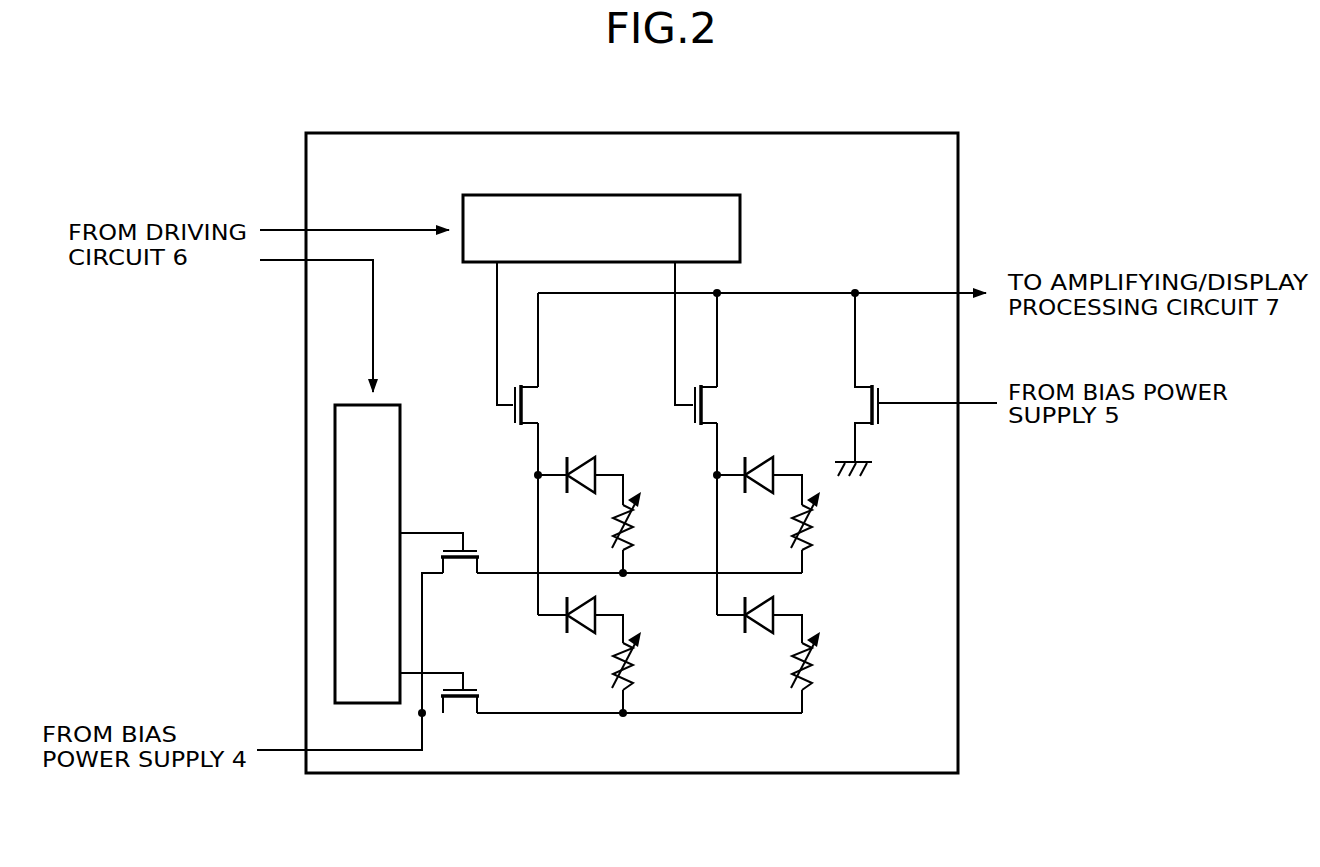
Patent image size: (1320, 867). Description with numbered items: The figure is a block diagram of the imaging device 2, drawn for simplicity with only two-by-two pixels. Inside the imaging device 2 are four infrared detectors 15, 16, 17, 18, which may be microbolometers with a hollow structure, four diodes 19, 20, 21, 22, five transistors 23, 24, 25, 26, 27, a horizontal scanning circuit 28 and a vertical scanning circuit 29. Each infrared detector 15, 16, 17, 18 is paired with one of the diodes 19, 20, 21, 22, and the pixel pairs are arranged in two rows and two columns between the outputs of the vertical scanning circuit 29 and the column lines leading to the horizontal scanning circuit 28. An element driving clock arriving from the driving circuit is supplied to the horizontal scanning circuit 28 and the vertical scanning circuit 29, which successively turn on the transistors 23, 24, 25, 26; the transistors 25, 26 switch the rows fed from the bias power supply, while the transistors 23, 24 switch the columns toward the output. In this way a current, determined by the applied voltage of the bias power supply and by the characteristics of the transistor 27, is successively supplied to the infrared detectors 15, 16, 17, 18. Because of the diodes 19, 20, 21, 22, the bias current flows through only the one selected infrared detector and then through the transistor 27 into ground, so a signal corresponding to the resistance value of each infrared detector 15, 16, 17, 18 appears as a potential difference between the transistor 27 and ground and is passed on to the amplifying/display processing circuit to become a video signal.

The imaging device 2 is at (962, 161).
The infrared detector 15 is at (641, 524).
The infrared detector 16 is at (820, 524).
The infrared detector 17 is at (641, 661).
The infrared detector 18 is at (820, 661).
The diode 19 is at (589, 463).
The diode 20 is at (767, 463).
The diode 21 is at (577, 632).
The diode 22 is at (755, 632).
The transistor 23 is at (520, 429).
The transistor 24 is at (727, 401).
The transistor 25 is at (483, 562).
The transistor 26 is at (483, 705).
The transistor 27 is at (867, 385).
The horizontal scanning circuit 28 is at (744, 229).
The vertical scanning circuit 29 is at (402, 420).